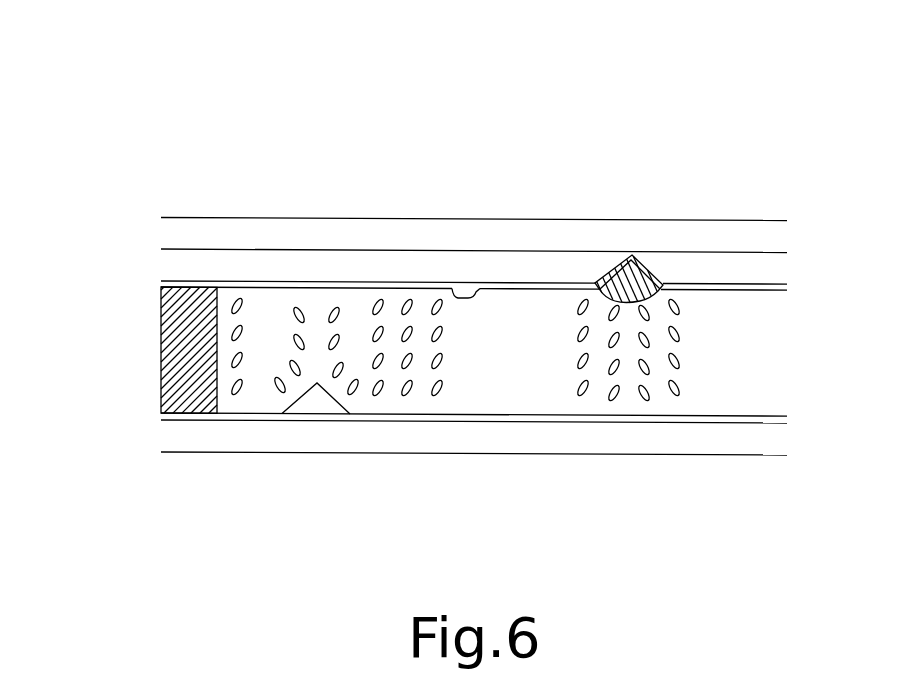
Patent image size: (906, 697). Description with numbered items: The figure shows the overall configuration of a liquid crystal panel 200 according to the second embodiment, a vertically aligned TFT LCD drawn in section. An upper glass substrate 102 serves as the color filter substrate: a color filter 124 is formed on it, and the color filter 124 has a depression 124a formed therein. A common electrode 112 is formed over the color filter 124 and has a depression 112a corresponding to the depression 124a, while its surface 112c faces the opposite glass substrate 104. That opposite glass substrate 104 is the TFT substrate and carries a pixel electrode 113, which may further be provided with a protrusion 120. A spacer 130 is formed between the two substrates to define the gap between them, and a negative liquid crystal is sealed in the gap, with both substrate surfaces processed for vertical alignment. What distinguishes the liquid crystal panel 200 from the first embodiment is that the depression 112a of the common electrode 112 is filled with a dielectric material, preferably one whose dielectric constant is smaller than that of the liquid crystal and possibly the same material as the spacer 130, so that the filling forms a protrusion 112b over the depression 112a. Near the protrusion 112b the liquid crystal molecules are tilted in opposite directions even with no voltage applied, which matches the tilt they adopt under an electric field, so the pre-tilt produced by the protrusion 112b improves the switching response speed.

The liquid crystal panel 200 is at (248, 143).
The glass substrate 102 is at (300, 218).
The color filter 124 is at (378, 260).
The common electrode 112 is at (748, 283).
The depression 112a is at (615, 265).
The protrusion 112b is at (595, 283).
The surface 112c is at (448, 283).
The depression 124a is at (658, 262).
The spacer 130 is at (172, 334).
The protrusion 120 is at (315, 407).
The pixel electrode 113 is at (742, 423).
The glass substrate 104 is at (527, 457).